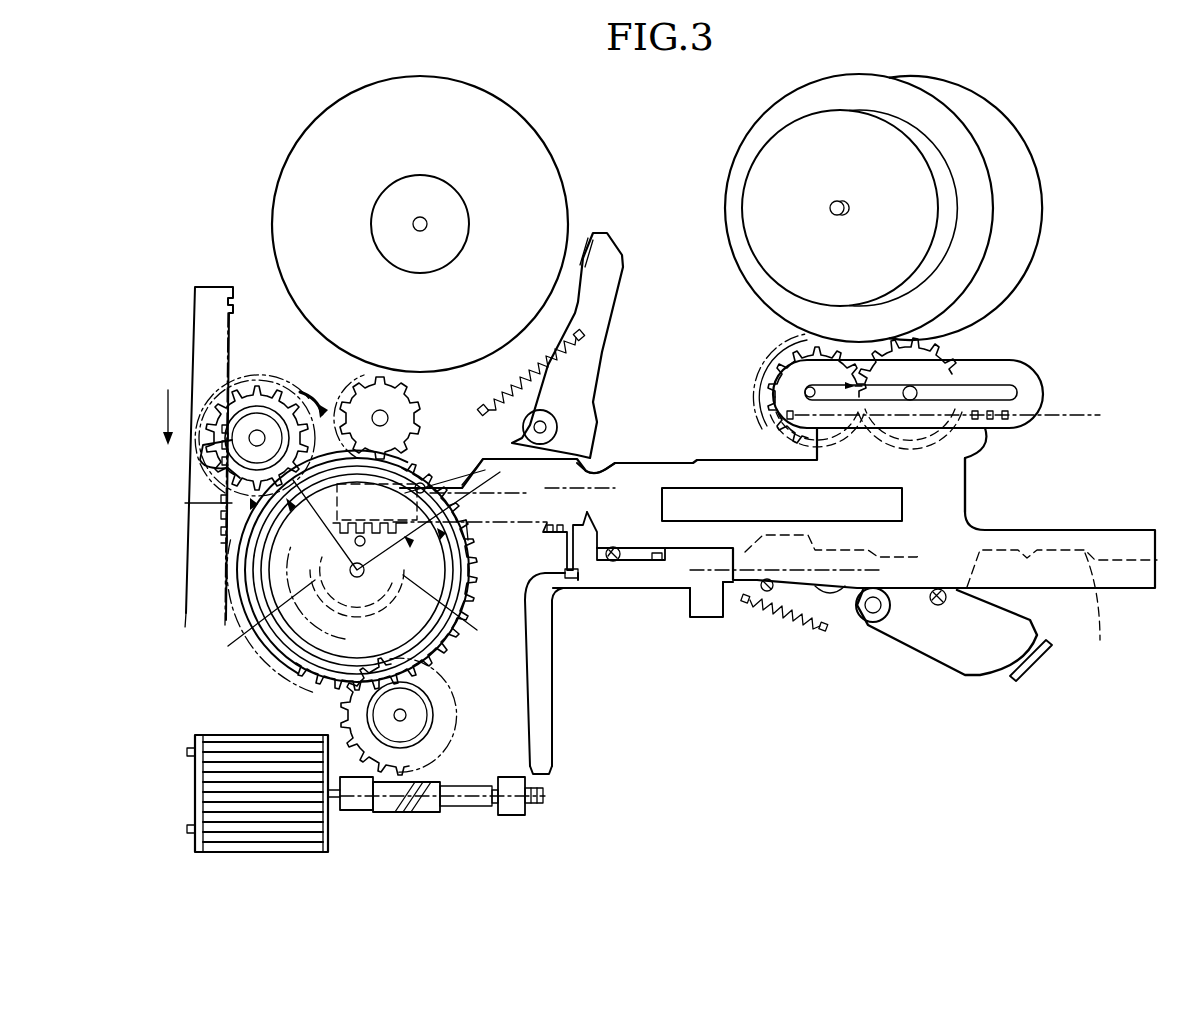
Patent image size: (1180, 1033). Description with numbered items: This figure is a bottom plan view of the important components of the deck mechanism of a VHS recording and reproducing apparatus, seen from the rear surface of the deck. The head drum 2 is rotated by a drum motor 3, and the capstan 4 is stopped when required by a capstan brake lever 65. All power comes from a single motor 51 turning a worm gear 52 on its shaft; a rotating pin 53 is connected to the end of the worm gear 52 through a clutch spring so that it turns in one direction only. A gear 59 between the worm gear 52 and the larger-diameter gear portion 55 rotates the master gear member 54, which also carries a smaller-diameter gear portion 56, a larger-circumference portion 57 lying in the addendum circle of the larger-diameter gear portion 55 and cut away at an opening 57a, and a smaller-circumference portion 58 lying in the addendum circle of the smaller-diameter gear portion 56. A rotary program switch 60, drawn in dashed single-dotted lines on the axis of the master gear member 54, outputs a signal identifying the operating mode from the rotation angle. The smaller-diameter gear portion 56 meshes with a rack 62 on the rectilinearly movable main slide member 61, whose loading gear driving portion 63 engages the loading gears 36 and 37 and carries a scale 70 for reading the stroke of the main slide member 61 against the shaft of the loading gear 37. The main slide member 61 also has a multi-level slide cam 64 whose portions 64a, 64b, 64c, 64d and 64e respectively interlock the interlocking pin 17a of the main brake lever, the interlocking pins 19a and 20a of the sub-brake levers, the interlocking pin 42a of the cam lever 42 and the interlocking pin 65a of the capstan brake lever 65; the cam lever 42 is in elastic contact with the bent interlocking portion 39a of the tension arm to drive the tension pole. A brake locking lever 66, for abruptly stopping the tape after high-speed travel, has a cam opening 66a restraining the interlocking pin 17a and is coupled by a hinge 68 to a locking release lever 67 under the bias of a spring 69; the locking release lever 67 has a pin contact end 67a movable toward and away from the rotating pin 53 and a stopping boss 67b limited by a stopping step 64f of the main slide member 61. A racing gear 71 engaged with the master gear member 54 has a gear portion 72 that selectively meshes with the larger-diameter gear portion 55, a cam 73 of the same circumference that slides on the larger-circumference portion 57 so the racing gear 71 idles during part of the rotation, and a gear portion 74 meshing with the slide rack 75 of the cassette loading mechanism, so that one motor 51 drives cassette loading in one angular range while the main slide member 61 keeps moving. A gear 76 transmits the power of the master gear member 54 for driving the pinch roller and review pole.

The head drum 2 is at (1032, 208).
The drum motor 3 is at (778, 138).
The capstan 4 is at (557, 178).
The interlocking pin 17a is at (613, 562).
The interlocking pin 19a is at (767, 592).
The interlocking pin 20a is at (425, 478).
The loading gear 36 is at (945, 348).
The loading gear 37 is at (800, 343).
The interlocking portion 39a is at (1035, 660).
The cam lever 42 is at (978, 676).
The interlocking pin 42a is at (938, 606).
The motor 51 is at (225, 755).
The worm gear 52 is at (400, 812).
The rotating pin 53 is at (515, 818).
The master gear member 54 is at (263, 546).
The larger-diameter gear portion 55 is at (185, 503).
The smaller-diameter gear portion 56 is at (257, 625).
The larger-circumference portion 57 is at (320, 680).
The opening 57a is at (472, 560).
The smaller-circumference portion 58 is at (455, 611).
The gear 59 is at (465, 710).
The rotary program switch 60 is at (222, 590).
The main slide member 61 is at (975, 488).
The rack 62 is at (548, 535).
The loading gear driving portion 63 is at (936, 394).
The slide member 64 is at (774, 508).
The slide cam portion 64a is at (951, 561).
The slide cam portion 64b is at (800, 583).
The slide cam portion 64c is at (500, 490).
The slide cam portion 64d is at (603, 467).
The slide cam portion 64e is at (1104, 611).
The stopping step 64f is at (715, 582).
The capstan brake lever 65 is at (600, 352).
The interlocking pin 65a is at (530, 385).
The brake locking lever 66 is at (690, 572).
The cam opening 66a is at (657, 562).
The locking release lever 67 is at (545, 690).
The pin contact end 67a is at (552, 776).
The stopping boss 67b is at (570, 580).
The hinge 68 is at (840, 592).
The spring 69 is at (790, 620).
The scale 70 is at (1090, 418).
The racing gear 71 is at (292, 390).
The gear portion 72 is at (245, 390).
The cam 73 is at (200, 465).
The gear portion 74 is at (250, 420).
The slide rack 75 is at (220, 290).
The gear 76 is at (410, 410).